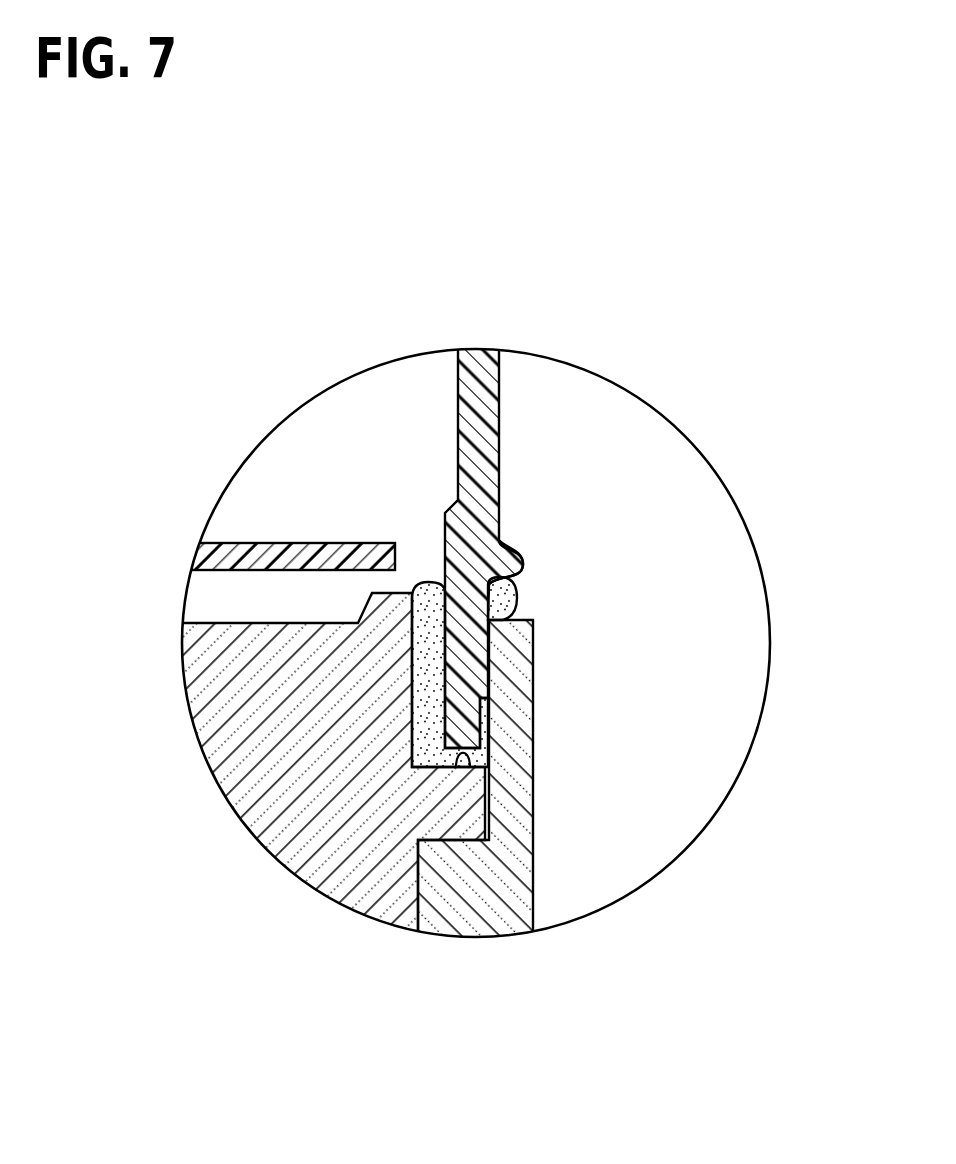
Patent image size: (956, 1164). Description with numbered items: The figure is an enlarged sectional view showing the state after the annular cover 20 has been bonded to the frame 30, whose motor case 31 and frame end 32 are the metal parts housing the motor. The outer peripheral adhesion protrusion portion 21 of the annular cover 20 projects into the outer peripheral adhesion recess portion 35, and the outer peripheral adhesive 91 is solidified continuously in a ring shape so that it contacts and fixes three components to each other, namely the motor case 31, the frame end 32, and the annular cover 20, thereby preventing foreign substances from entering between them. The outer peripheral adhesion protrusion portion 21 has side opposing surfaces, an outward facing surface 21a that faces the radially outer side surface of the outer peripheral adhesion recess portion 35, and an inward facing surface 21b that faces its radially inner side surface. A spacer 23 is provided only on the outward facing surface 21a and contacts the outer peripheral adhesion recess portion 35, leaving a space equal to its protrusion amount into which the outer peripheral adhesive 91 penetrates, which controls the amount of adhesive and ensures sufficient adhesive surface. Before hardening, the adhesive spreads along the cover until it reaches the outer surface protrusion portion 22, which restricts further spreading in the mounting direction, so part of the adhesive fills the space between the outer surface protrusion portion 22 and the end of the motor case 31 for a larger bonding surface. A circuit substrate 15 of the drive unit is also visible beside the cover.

The circuit substrate 15 is at (212, 555).
The annular cover 20 is at (646, 529).
The outer peripheral adhesion protrusion portion 21 is at (462, 740).
The outward facing surface 21a is at (480, 718).
The inward facing surface 21b is at (432, 637).
The outer surface protrusion portion 22 is at (513, 568).
The spacer 23 is at (485, 660).
The frame 30 is at (237, 849).
The motor case 31 is at (517, 918).
The frame end 32 is at (218, 710).
The outer peripheral adhesion recess portion 35 is at (469, 764).
The outer peripheral adhesive 91 is at (435, 735).